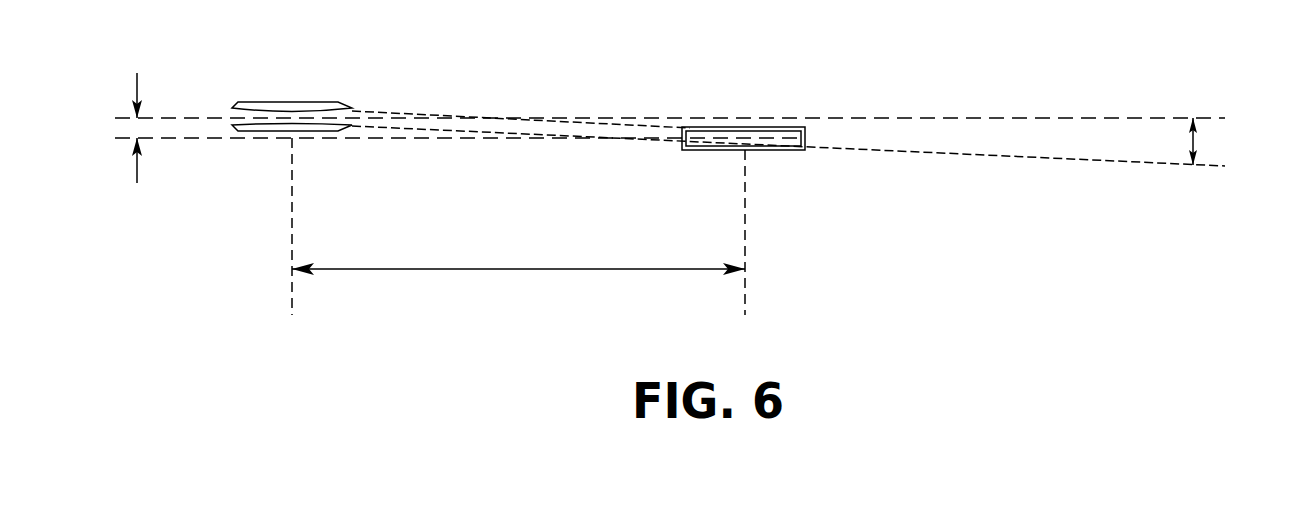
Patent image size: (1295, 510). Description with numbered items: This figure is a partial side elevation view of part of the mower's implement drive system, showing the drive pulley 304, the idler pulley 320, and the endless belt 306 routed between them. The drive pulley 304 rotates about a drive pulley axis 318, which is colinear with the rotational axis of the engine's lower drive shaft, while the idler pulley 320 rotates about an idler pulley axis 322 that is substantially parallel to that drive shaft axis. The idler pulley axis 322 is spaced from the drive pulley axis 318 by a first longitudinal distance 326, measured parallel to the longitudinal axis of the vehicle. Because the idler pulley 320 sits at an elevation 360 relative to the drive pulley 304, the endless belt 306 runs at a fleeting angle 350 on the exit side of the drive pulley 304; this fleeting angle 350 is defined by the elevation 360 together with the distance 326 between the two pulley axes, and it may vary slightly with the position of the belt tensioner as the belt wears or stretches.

The drive pulley 304 is at (777, 150).
The endless belt 306 is at (527, 139).
The drive pulley axis 318 is at (745, 290).
The idler pulley 320 is at (310, 130).
The idler pulley axis 322 is at (292, 295).
The first longitudinal distance 326 is at (521, 270).
The fleeting angle 350 is at (1193, 142).
The elevation 360 is at (137, 172).